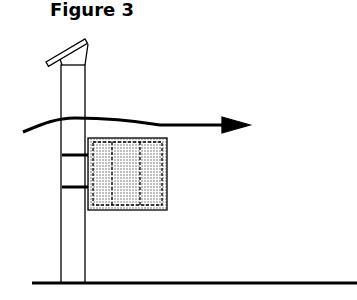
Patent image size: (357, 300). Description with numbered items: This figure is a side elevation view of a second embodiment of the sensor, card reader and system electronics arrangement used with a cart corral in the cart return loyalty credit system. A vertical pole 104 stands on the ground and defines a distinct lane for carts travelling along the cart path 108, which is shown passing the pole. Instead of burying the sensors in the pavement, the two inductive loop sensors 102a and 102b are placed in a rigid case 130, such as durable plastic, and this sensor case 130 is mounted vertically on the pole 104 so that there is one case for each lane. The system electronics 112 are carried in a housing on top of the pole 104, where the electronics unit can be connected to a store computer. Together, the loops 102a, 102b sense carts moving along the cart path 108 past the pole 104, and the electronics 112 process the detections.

The vertical pole 104 is at (85, 90).
The system electronics 112 is at (86, 42).
The cart path 108 is at (175, 122).
The rigid case 130 is at (167, 170).
The inductive loop sensor 102a is at (102, 205).
The inductive loop sensor 102b is at (152, 208).